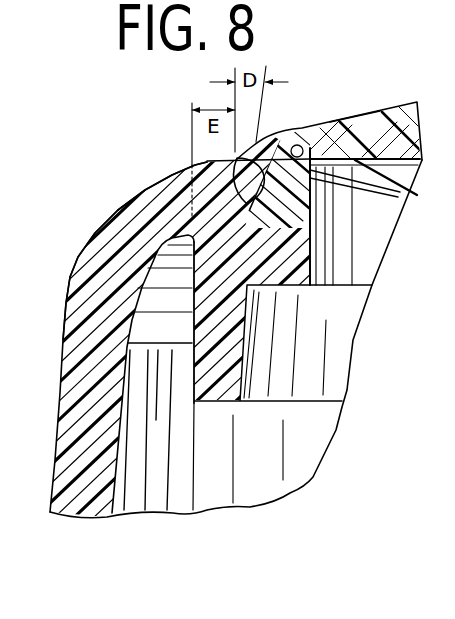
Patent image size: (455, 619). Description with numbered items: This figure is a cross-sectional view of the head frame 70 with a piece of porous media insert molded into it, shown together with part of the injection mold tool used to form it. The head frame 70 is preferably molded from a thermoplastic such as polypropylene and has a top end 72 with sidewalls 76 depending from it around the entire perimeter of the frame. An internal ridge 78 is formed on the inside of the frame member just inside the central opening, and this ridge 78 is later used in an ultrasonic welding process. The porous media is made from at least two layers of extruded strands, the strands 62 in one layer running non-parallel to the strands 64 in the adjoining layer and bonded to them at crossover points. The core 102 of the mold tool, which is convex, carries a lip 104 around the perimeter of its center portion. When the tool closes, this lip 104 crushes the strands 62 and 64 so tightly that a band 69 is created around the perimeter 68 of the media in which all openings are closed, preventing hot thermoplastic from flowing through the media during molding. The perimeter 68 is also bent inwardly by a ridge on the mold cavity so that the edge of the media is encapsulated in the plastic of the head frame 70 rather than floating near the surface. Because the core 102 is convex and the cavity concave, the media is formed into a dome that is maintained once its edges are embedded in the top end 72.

The strands 62 is at (422, 162).
The strands 64 is at (296, 132).
The perimeter 68 is at (237, 160).
The band 69 is at (344, 118).
The head frame 70 is at (58, 302).
The top end 72 is at (165, 171).
The sidewalls 76 is at (94, 270).
The internal ridge 78 is at (203, 371).
The core 102 is at (363, 241).
The lip 104 is at (328, 153).